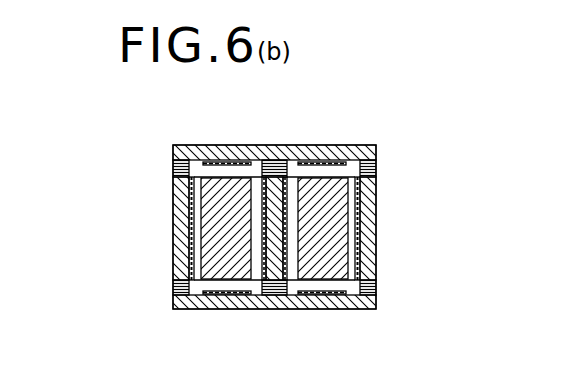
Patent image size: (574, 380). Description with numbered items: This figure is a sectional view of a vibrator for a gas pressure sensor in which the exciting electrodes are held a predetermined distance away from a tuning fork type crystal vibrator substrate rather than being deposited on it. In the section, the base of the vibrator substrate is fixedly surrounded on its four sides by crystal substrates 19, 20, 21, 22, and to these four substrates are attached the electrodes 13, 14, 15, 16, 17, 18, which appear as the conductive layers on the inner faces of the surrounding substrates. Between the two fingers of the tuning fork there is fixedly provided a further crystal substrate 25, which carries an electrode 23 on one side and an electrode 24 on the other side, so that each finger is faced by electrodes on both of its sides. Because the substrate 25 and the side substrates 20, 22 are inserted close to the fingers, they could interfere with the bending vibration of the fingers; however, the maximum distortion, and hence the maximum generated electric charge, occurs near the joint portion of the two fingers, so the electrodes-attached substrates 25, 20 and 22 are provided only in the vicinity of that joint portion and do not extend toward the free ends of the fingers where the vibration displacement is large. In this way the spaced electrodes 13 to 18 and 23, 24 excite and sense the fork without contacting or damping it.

The electrode 13 is at (224, 150).
The electrode 14 is at (330, 150).
The electrode 15 is at (358, 250).
The electrode 16 is at (328, 298).
The electrode 17 is at (227, 297).
The electrode 18 is at (186, 206).
The crystal substrate 19 is at (184, 151).
The crystal substrate 20 is at (363, 190).
The crystal substrate 21 is at (276, 298).
The crystal substrate 22 is at (190, 249).
The electrode 23 is at (263, 158).
The electrode 24 is at (296, 161).
The crystal substrate 25 is at (277, 178).